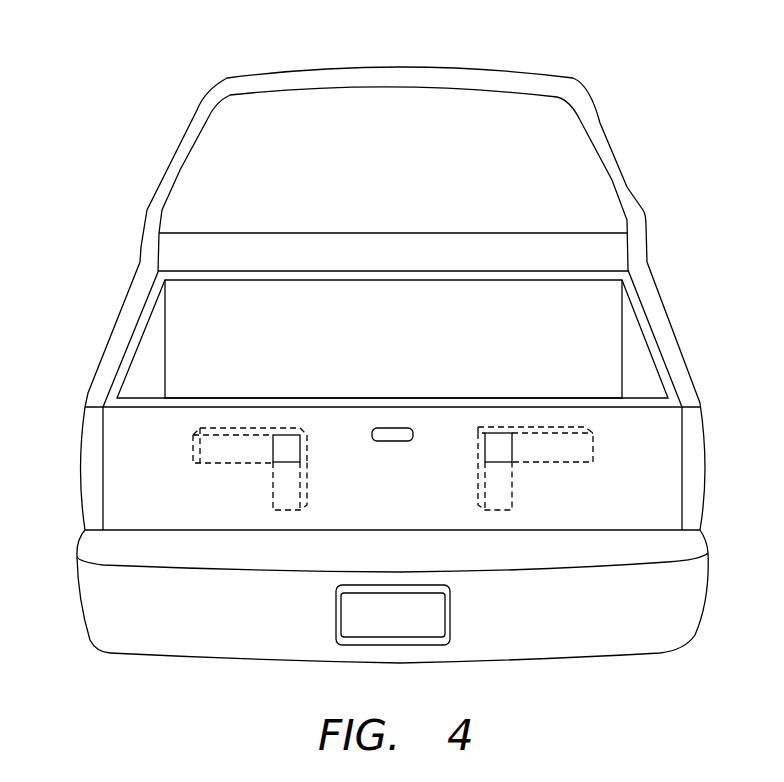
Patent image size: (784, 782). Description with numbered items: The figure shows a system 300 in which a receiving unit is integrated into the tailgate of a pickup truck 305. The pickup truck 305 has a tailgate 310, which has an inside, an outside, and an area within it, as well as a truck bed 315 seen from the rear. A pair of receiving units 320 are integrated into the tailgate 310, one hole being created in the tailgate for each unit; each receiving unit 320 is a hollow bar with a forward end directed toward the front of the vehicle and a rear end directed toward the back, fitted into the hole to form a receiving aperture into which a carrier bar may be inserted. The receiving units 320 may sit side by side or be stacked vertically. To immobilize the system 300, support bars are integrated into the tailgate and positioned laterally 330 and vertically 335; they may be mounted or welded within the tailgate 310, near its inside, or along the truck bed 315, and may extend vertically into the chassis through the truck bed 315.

The system 300 is at (374, 343).
The pickup truck 305 is at (615, 145).
The tailgate 310 is at (128, 432).
The truck bed 315 is at (628, 345).
The receiving unit 320 is at (486, 448).
The laterally positioned support bar 330 is at (593, 448).
The vertically positioned support bar 335 is at (512, 490).